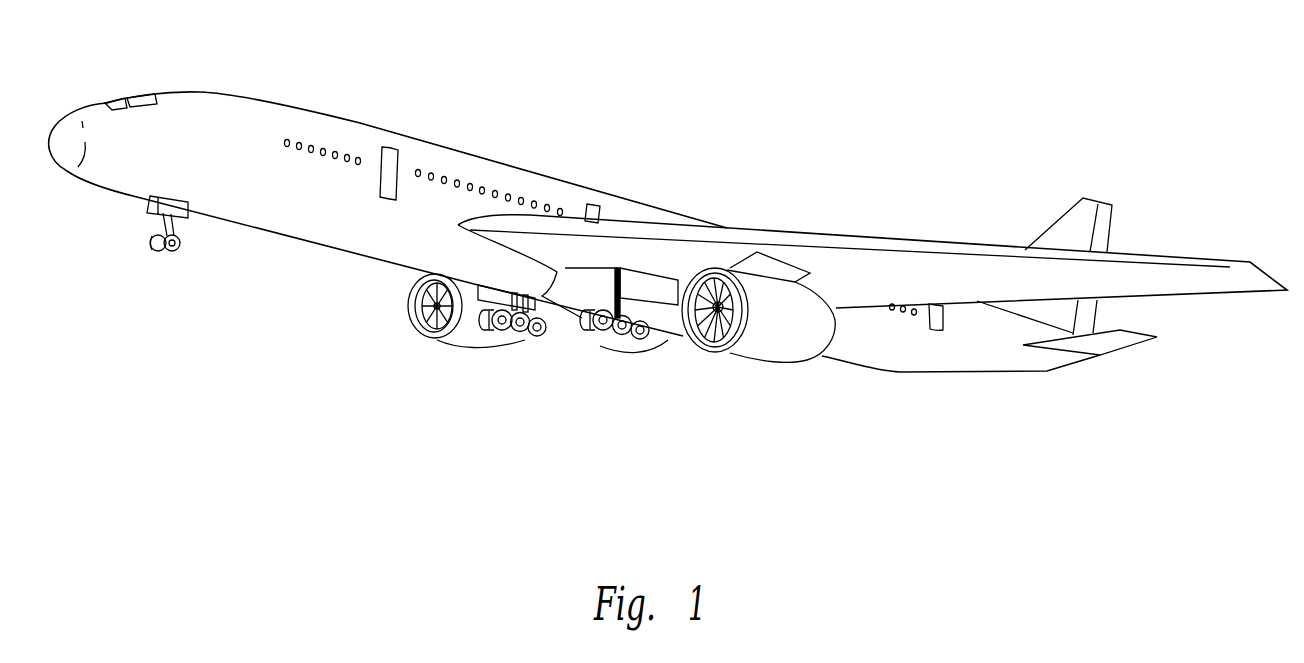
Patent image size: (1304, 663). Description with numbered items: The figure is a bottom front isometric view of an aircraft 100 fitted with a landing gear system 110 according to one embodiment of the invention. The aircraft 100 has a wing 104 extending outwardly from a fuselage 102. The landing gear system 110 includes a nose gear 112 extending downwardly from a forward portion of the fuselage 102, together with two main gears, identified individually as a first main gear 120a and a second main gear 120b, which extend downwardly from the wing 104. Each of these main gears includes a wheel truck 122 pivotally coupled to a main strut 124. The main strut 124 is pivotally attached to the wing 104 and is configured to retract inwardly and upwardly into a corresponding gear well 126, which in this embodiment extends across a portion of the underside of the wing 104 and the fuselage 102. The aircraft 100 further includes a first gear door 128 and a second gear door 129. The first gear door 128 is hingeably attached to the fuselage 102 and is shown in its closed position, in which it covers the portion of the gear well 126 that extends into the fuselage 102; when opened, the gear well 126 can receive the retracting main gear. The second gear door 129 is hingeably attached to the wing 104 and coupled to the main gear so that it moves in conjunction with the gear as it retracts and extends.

The aircraft 100 is at (668, 284).
The fuselage 102 is at (235, 93).
The wing 104 is at (837, 233).
The landing gear system 110 is at (410, 324).
The nose gear 112 is at (142, 249).
The first main gear 120a is at (614, 294).
The second main gear 120b is at (455, 340).
The wheel truck 122 is at (623, 337).
The main strut 124 is at (587, 312).
The gear well 126 is at (586, 278).
The first gear door 128 is at (550, 294).
The second gear door 129 is at (675, 340).